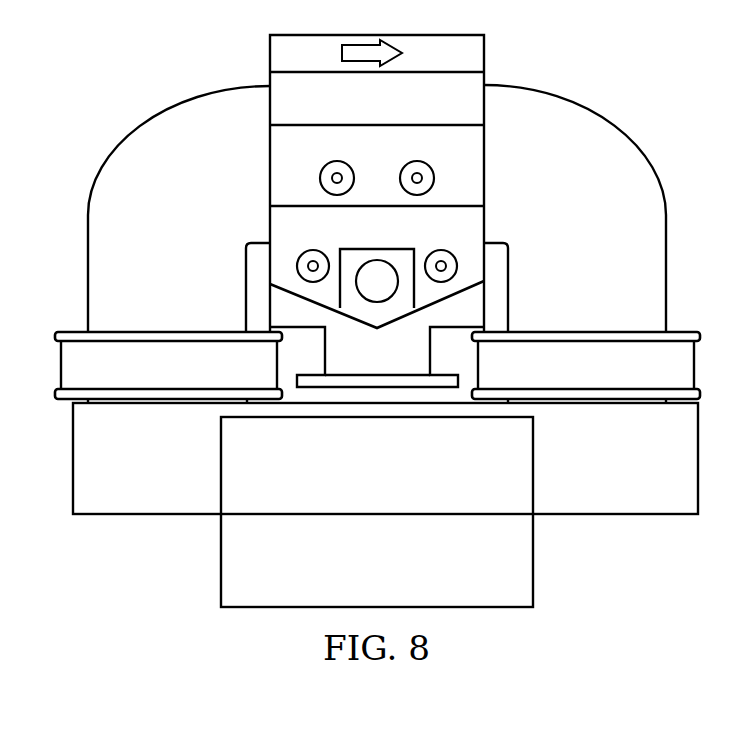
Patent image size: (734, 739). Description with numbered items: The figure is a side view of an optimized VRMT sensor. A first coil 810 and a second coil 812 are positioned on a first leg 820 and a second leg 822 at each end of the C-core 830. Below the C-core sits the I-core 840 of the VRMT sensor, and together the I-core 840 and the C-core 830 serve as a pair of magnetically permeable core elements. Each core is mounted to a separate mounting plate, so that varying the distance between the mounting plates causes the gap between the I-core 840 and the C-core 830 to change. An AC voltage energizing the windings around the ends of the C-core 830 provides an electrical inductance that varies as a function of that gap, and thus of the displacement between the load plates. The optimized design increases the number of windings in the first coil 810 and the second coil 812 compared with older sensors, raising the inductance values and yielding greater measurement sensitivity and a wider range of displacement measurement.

The first coil 810 is at (168, 333).
The second coil 812 is at (587, 334).
The first leg 820 is at (97, 244).
The second leg 822 is at (663, 246).
The C-core 830 is at (574, 87).
The I-core 840 is at (617, 522).